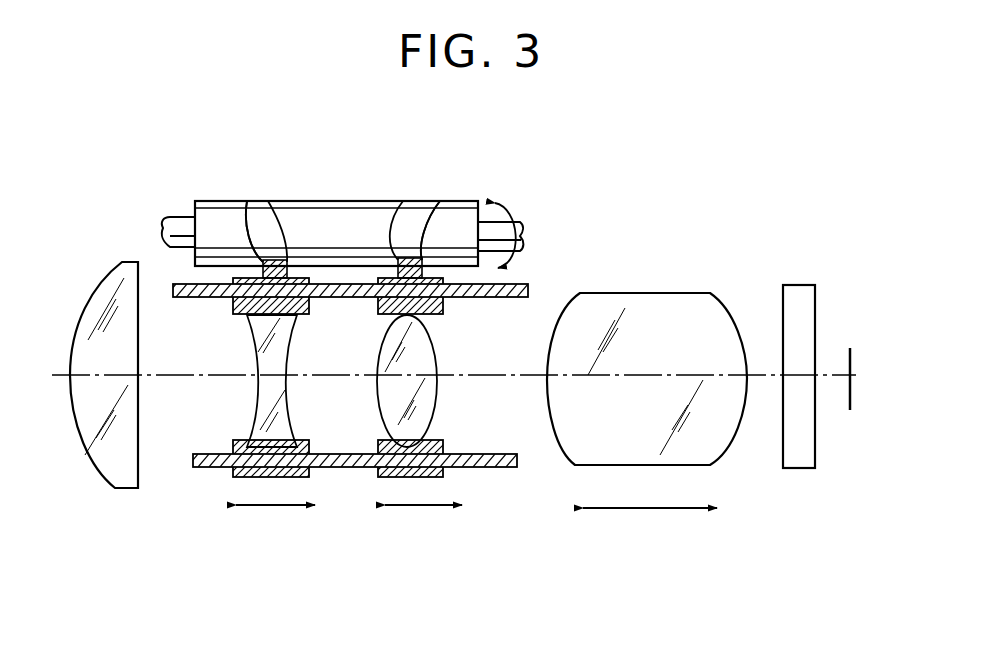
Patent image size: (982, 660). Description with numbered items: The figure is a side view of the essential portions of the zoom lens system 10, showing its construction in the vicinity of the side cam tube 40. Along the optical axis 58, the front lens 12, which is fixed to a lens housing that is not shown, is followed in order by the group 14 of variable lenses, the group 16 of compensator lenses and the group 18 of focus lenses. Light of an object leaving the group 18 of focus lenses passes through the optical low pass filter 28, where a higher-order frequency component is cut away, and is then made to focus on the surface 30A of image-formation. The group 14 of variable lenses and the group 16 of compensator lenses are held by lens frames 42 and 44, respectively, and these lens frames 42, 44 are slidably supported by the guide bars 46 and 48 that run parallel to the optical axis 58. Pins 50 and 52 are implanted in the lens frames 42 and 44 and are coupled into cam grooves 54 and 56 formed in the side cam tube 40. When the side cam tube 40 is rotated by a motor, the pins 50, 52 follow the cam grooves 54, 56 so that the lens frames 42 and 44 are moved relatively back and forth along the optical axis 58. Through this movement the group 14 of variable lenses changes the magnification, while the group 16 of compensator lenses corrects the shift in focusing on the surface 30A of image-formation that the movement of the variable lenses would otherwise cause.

The zoom lens system 10 is at (633, 177).
The front lens 12 is at (123, 489).
The group of variable lenses 14 is at (275, 390).
The group of compensator lenses 16 is at (423, 405).
The group of focus lenses 18 is at (665, 313).
The optical low pass filter 28 is at (797, 300).
The surface of image-formation 30A is at (849, 368).
The side cam tube 40 is at (347, 220).
The lens frame 42 is at (310, 306).
The lens frame 44 is at (445, 312).
The guide bar 46 is at (529, 286).
The guide bar 48 is at (500, 468).
The pin 50 is at (293, 227).
The pin 52 is at (388, 228).
The cam groove 54 is at (248, 201).
The cam groove 56 is at (432, 206).
The optical axis 58 is at (165, 369).